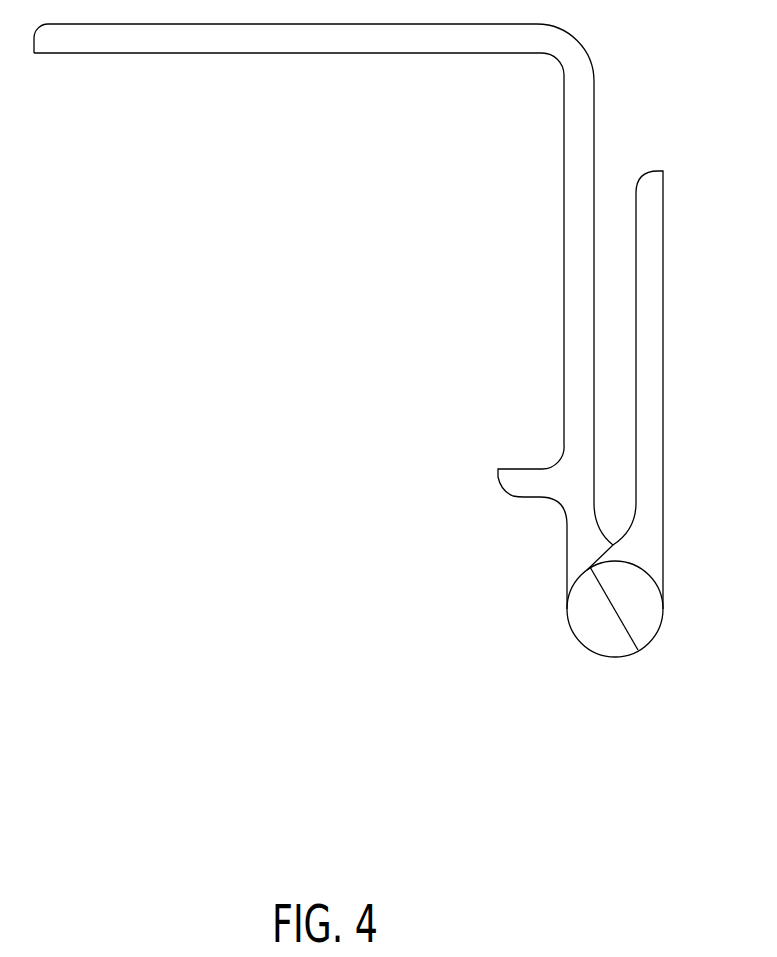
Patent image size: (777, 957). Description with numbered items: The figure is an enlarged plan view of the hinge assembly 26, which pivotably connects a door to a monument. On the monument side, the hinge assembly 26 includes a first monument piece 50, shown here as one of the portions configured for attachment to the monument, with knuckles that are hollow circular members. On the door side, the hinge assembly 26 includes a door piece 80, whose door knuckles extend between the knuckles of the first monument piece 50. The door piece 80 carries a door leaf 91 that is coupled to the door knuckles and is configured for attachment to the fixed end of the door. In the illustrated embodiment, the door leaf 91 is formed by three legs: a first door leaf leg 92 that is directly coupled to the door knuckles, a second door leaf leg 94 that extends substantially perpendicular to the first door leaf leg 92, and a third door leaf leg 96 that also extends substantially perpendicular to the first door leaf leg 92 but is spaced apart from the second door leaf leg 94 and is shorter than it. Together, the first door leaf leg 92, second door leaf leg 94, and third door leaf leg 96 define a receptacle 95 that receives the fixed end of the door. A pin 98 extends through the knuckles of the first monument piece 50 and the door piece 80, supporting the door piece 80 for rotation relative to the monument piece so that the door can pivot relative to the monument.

The hinge assembly 26 is at (273, 466).
The first monument piece 50 is at (656, 293).
The door piece 80 is at (530, 532).
The door leaf 91 is at (599, 70).
The first door leaf leg 92 is at (575, 257).
The second door leaf leg 94 is at (280, 40).
The receptacle 95 is at (273, 233).
The third door leaf leg 96 is at (522, 473).
The pin 98 is at (604, 636).